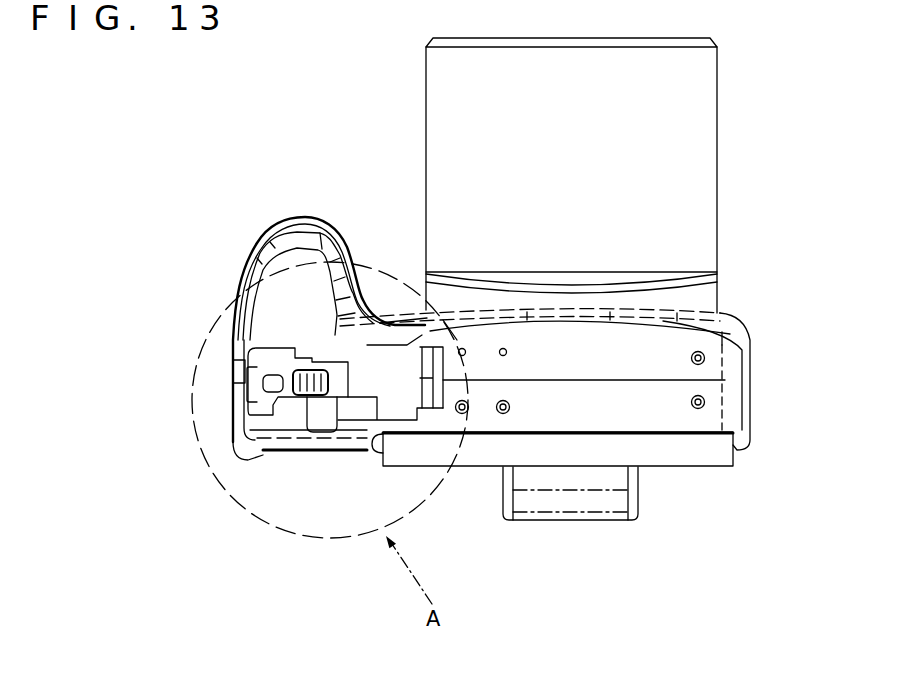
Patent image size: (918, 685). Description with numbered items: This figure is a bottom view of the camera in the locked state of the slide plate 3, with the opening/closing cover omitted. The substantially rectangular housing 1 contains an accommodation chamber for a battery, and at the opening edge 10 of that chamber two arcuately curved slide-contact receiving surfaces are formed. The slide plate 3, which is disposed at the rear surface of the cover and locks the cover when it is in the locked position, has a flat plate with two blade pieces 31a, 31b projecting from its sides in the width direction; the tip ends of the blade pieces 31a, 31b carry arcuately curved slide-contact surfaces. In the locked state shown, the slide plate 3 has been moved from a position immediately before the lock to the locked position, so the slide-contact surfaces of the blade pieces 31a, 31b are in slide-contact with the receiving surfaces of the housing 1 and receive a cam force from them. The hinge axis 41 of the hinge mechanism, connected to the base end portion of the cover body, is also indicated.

The housing 1 is at (733, 362).
The slide plate 3 is at (325, 365).
The opening edge 10 is at (280, 420).
The blade piece 31a is at (322, 420).
The blade piece 31b is at (266, 250).
The hinge axis 41 is at (427, 377).